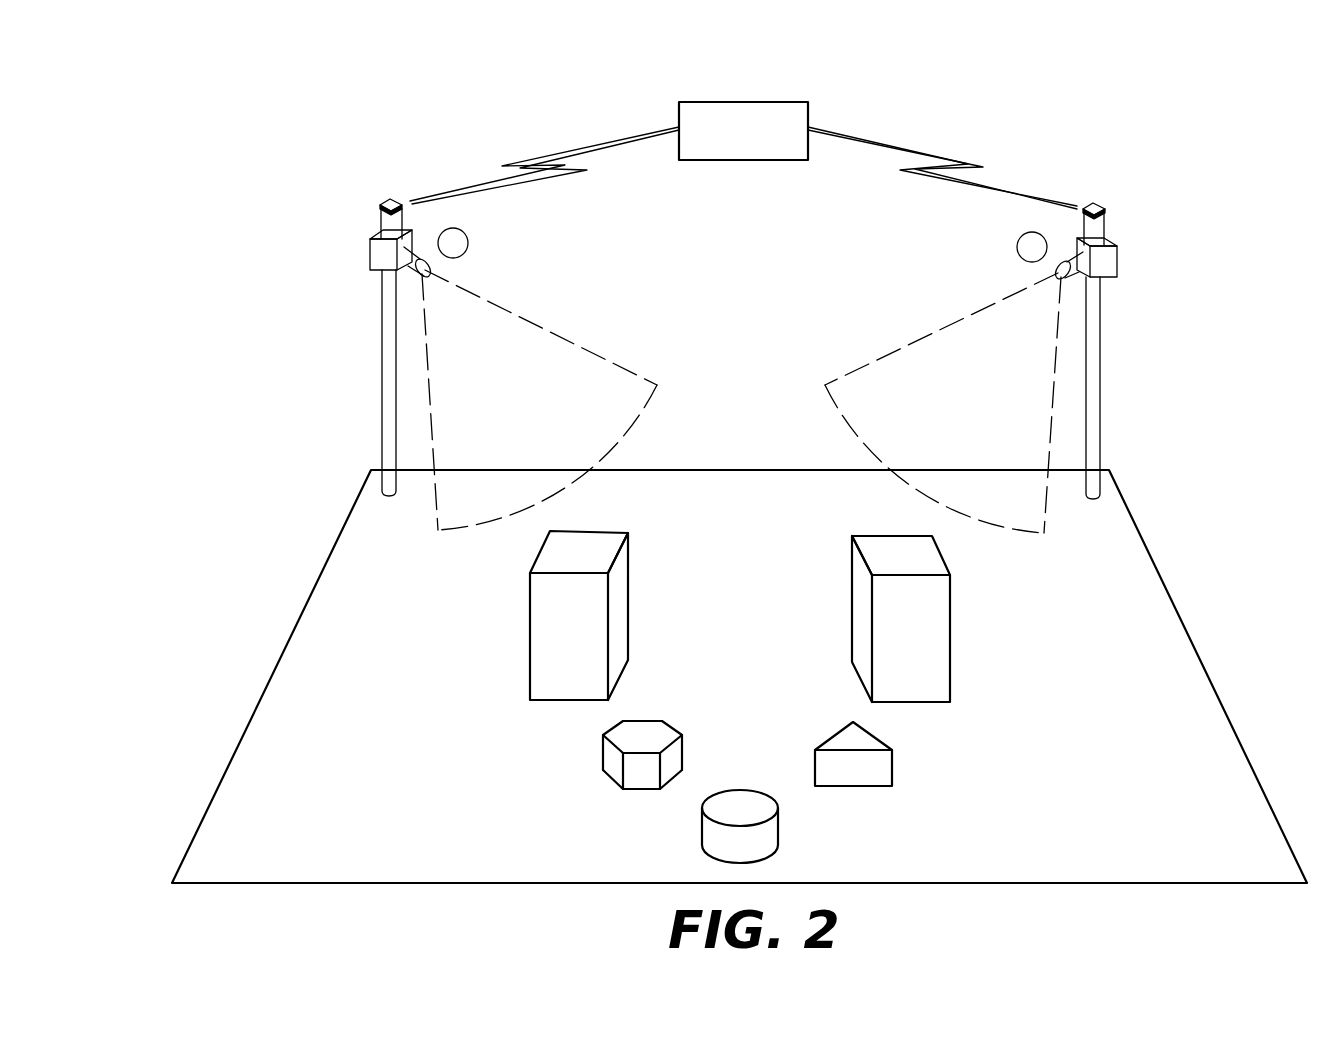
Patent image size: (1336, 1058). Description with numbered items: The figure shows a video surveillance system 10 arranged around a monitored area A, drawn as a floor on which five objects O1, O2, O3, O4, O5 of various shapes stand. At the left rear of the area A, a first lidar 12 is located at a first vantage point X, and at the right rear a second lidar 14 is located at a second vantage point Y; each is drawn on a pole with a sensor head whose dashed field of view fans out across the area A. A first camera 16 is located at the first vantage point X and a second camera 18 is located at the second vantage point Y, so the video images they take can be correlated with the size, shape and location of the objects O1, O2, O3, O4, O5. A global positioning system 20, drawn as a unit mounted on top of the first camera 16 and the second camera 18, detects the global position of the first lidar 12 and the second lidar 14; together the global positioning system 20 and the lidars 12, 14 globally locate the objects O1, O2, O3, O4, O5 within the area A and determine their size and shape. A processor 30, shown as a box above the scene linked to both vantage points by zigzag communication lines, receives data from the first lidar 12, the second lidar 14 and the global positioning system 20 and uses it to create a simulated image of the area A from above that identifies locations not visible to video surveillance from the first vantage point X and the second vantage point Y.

The video surveillance system 10 is at (1074, 100).
The first lidar 12 is at (737, 334).
The second lidar 14 is at (1106, 353).
The first camera 16 is at (373, 258).
The second camera 18 is at (1113, 260).
The global positioning system 20 is at (391, 198).
The processor 30 is at (746, 102).
The area A is at (304, 647).
The first vantage point X is at (453, 243).
The second vantage point Y is at (1032, 247).
The object O1 is at (553, 555).
The object O2 is at (927, 557).
The object O3 is at (739, 800).
The object O4 is at (660, 735).
The object O5 is at (862, 742).